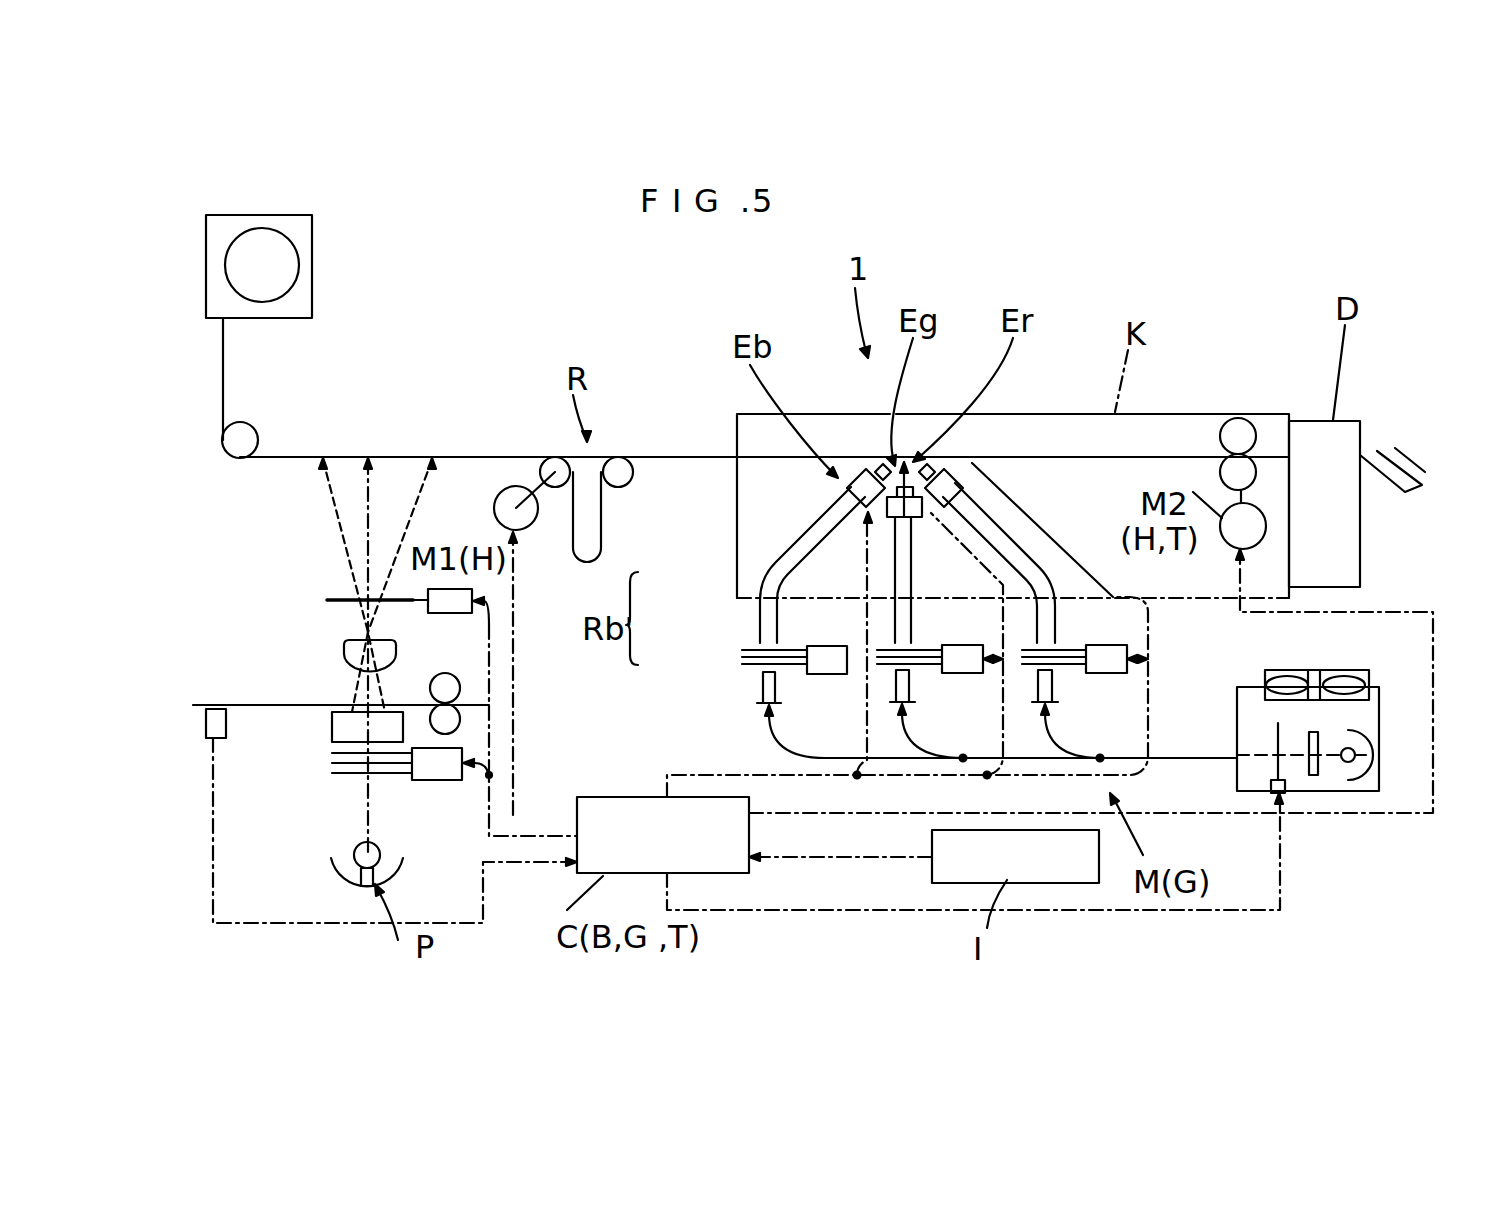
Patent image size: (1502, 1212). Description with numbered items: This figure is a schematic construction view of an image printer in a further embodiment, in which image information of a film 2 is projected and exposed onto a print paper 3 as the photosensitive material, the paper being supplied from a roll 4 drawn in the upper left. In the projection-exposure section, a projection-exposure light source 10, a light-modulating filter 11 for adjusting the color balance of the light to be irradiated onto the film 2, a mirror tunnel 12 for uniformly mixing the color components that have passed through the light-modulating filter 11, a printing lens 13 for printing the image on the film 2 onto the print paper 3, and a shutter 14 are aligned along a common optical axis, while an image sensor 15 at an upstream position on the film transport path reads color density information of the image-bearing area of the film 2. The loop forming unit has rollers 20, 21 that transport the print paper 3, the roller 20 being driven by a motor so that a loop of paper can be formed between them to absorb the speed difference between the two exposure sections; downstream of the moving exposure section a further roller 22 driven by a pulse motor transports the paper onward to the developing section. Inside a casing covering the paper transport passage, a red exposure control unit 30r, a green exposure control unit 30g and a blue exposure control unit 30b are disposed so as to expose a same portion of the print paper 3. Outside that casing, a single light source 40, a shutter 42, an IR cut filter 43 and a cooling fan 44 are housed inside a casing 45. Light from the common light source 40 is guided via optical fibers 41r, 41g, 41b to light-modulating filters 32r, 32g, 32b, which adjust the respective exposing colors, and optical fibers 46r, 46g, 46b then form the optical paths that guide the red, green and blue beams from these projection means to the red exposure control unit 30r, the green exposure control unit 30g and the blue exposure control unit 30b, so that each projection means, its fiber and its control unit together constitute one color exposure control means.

The film 2 is at (252, 705).
The print paper 3 is at (223, 380).
The supply roll 4 is at (313, 276).
The projection-exposure light source 10 is at (352, 840).
The light-modulating filter 11 is at (436, 782).
The mirror tunnel 12 is at (332, 728).
The printing lens 13 is at (344, 642).
The shutter 14 is at (332, 597).
The image sensor 15 is at (208, 741).
The roller 20 is at (553, 460).
The roller 21 is at (618, 468).
The roller 22 is at (1236, 428).
The blue exposure control unit 30b is at (885, 478).
The green exposure control unit 30g is at (943, 450).
The red exposure control unit 30r is at (946, 480).
The light-modulating filter 32b is at (752, 650).
The light-modulating filter 32g is at (940, 700).
The light-modulating filter 32r is at (1115, 645).
The light source 40 is at (1365, 768).
The optical fiber 41b is at (760, 690).
The optical fiber 41g is at (893, 690).
The optical fiber 41r is at (1086, 716).
The shutter 42 is at (1283, 765).
The IR cut filter 43 is at (1318, 768).
The cooling fan 44 is at (1357, 670).
The casing 45 is at (1380, 702).
The optical fiber 46b is at (802, 538).
The optical fiber 46g is at (895, 575).
The optical fiber 46r is at (1032, 560).